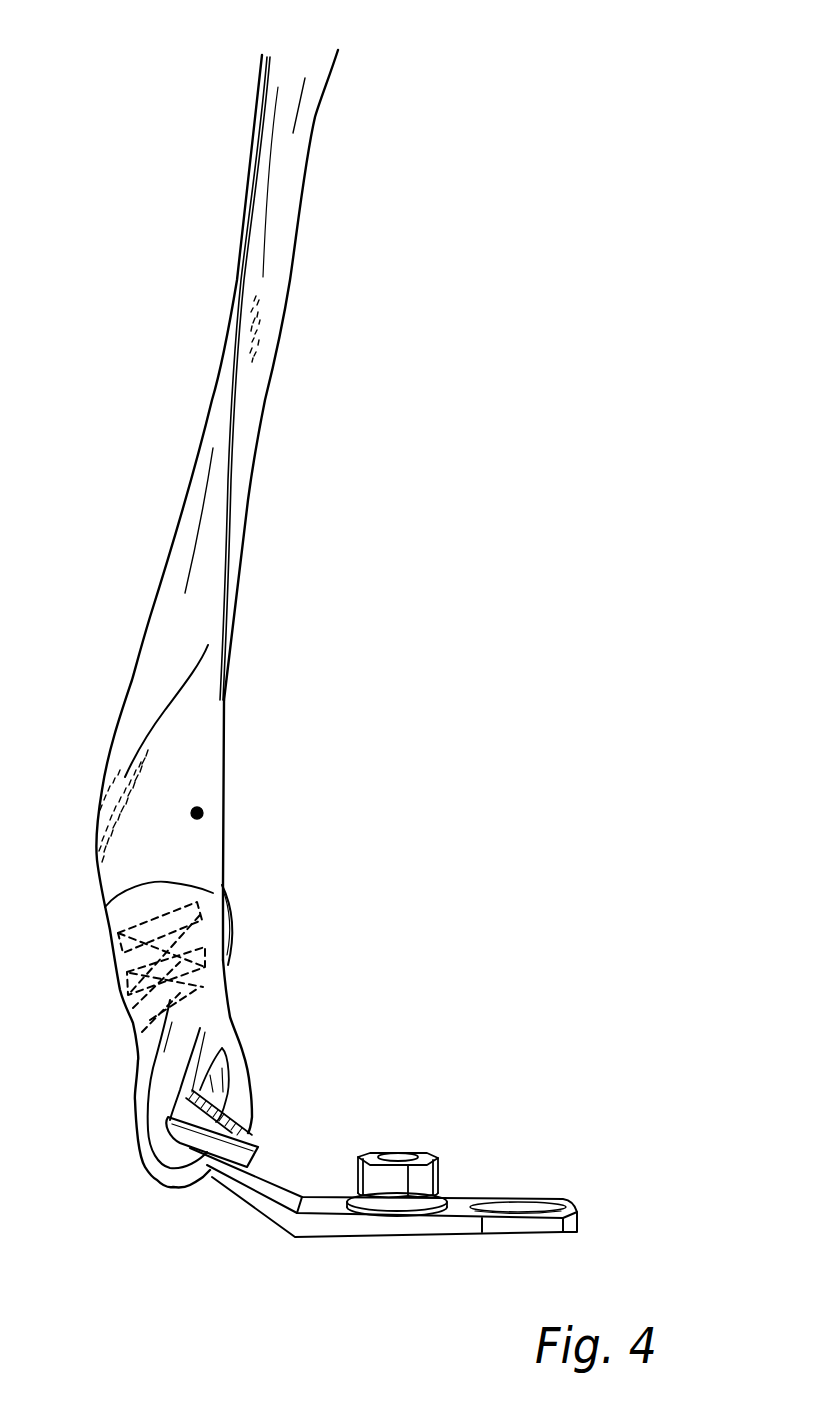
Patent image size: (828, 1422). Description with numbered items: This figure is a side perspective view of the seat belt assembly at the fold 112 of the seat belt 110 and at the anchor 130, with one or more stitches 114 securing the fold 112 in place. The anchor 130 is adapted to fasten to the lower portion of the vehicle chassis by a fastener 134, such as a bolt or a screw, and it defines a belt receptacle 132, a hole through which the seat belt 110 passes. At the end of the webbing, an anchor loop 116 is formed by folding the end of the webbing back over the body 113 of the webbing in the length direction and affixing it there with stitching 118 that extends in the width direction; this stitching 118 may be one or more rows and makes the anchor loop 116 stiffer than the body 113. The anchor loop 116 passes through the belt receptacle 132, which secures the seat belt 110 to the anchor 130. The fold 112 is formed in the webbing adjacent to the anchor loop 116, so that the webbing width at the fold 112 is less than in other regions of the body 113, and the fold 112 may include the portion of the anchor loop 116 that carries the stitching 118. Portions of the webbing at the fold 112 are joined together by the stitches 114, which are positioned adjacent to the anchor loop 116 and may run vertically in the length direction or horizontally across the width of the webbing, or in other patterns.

The seat belt 110 is at (392, 60).
The fold 112 is at (225, 762).
The body of the webbing 113 is at (243, 467).
The stitches 114 is at (197, 813).
The anchor loop 116 is at (235, 1083).
The stitching 118 is at (198, 937).
The anchor 130 is at (517, 1228).
The belt receptacle 132 is at (257, 1138).
The fastener 134 is at (422, 1170).